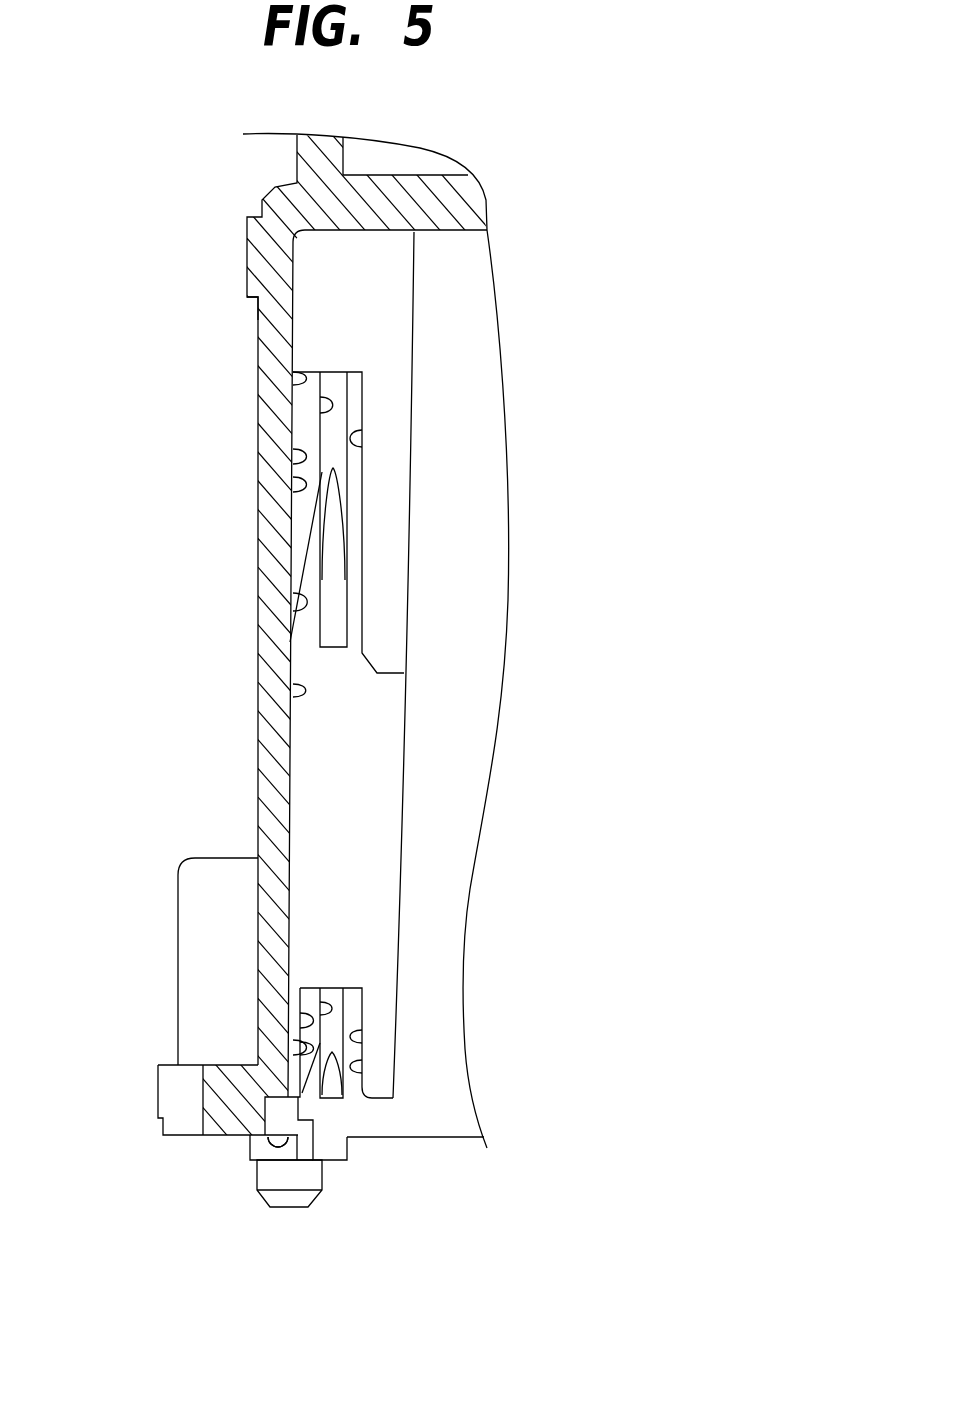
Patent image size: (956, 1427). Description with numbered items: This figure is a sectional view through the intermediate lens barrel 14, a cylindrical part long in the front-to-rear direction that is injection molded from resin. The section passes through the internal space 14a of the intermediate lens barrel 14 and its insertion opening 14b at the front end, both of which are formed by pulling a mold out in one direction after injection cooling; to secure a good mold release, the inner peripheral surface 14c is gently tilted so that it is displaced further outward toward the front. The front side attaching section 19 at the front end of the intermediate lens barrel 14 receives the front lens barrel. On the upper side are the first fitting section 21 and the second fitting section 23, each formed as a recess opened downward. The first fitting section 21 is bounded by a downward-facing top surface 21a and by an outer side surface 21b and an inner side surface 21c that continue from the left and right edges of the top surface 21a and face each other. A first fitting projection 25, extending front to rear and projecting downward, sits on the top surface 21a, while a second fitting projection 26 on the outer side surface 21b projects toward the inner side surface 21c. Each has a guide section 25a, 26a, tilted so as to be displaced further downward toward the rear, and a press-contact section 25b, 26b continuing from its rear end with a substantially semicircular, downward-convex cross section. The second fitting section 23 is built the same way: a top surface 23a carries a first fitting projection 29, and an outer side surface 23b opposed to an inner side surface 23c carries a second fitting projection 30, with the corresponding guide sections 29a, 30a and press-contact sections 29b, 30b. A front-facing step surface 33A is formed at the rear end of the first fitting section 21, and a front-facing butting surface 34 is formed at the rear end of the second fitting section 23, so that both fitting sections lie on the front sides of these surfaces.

The intermediate lens barrel 14 is at (264, 542).
The internal space 14a is at (480, 640).
The insertion opening 14b is at (285, 1162).
The inner peripheral surface 14c is at (290, 712).
The front side attaching section 19 is at (203, 1098).
The first fitting section 21 is at (297, 1014).
The top surface 21a is at (350, 1070).
The outer side surface 21b is at (297, 1048).
The inner side surface 21c is at (352, 1068).
The second fitting section 23 is at (300, 483).
The top surface 23a is at (353, 488).
The outer side surface 23b is at (295, 450).
The inner side surface 23c is at (363, 450).
The first fitting projection 25 is at (330, 987).
The guide section 25a is at (350, 1138).
The press-contact section 25b is at (363, 1037).
The second fitting projection 26 is at (310, 987).
The guide section 26a is at (332, 1095).
The press-contact section 26b is at (300, 1003).
The first fitting projection 29 is at (332, 388).
The guide section 29a is at (335, 585).
The press-contact section 29b is at (342, 415).
The second fitting projection 30 is at (300, 425).
The guide section 30a is at (295, 616).
The press-contact section 30b is at (297, 384).
The step surface 33A is at (340, 1002).
The butting surface 34 is at (258, 304).